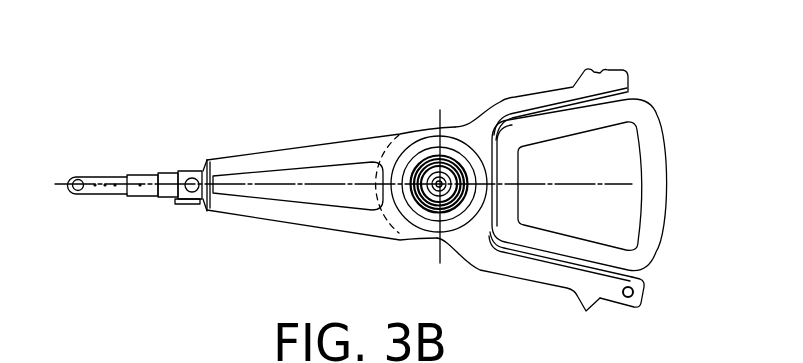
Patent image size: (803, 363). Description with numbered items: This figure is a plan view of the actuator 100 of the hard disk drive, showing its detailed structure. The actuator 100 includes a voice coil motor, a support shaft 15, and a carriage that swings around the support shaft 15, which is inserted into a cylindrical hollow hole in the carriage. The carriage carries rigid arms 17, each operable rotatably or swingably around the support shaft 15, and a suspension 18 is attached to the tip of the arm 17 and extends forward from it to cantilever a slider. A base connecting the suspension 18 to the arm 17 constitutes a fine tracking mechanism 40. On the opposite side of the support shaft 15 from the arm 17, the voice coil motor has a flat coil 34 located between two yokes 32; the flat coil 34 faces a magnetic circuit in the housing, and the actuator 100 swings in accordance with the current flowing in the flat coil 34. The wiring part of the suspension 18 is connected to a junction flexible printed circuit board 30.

The actuator 100 is at (393, 66).
The support shaft 15 is at (445, 147).
The arm 17 is at (281, 150).
The suspension 18 is at (100, 176).
The junction flexible printed circuit board 30 is at (328, 229).
The yoke 32 is at (547, 102).
The flat coil 34 is at (643, 124).
The fine tracking mechanism 40 is at (162, 200).